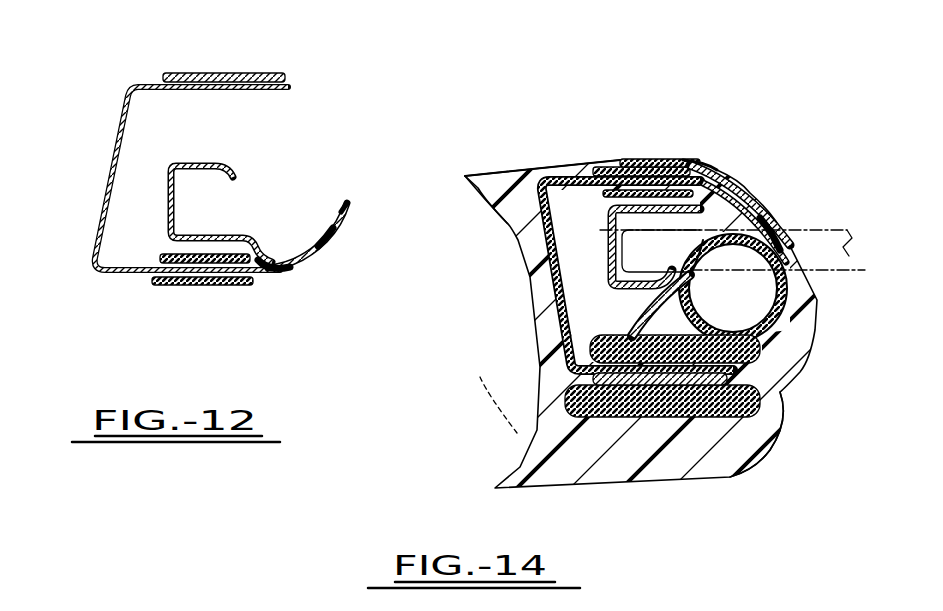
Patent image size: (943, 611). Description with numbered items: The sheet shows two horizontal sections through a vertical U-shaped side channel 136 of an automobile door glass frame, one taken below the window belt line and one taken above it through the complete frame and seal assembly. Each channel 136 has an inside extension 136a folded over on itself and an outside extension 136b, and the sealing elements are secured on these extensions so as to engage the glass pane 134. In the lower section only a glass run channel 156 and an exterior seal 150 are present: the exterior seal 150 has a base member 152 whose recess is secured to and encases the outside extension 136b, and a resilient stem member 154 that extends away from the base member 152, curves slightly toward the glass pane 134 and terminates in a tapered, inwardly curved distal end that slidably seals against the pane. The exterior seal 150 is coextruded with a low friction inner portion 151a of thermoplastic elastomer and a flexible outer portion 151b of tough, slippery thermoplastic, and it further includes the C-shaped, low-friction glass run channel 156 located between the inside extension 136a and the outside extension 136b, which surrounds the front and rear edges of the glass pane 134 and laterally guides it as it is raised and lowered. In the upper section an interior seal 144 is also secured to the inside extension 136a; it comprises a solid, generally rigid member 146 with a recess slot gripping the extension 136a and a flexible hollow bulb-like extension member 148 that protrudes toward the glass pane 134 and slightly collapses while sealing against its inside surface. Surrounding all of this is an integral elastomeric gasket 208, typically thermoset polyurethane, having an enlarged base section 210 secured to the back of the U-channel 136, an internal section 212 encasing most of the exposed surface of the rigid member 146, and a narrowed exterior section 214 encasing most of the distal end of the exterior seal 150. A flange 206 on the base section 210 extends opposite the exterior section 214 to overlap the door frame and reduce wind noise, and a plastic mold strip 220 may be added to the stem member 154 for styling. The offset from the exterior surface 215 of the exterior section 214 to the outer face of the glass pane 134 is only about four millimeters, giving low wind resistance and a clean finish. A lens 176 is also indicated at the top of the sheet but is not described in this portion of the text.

In FIG. 12, the U-shaped side channel 136 is at (127, 112).
In FIG. 14, the U-shaped side channel 136 is at (557, 307).
In FIG. 12, the inside extension 136a is at (230, 72).
In FIG. 14, the inside extension 136a is at (697, 383).
In FIG. 12, the outside extension 136b is at (143, 278).
In FIG. 14, the outside extension 136b is at (572, 170).
In FIG. 12, the exterior seal 150 is at (320, 247).
In FIG. 14, the exterior seal 150 is at (750, 197).
In FIG. 12, the low friction inner portion 151a is at (328, 230).
In FIG. 14, the low friction inner portion 151a is at (730, 205).
In FIG. 12, the flexible outer portion 151b is at (283, 273).
In FIG. 14, the flexible outer portion 151b is at (773, 200).
In FIG. 12, the base member 152 is at (238, 287).
In FIG. 14, the base member 152 is at (735, 187).
In FIG. 12, the stem member 154 is at (347, 203).
In FIG. 14, the stem member 154 is at (847, 256).
In FIG. 12, the glass run channel 156 is at (173, 220).
In FIG. 14, the glass run channel 156 is at (607, 232).
In FIG. 14, the lens 176 is at (415, 0).
In FIG. 14, the flange 206 is at (480, 177).
In FIG. 14, the gasket 208 is at (550, 350).
In FIG. 14, the base section 210 is at (530, 277).
In FIG. 14, the internal section 212 is at (612, 477).
In FIG. 14, the exterior section 214 is at (708, 157).
In FIG. 14, the exterior surface 215 is at (727, 170).
In FIG. 14, the mold strip 220 is at (642, 160).
In FIG. 14, the glass pane 134 is at (690, 272).
In FIG. 14, the interior seal 144 is at (790, 348).
In FIG. 14, the rigid member 146 is at (753, 410).
In FIG. 14, the hollow extension member 148 is at (813, 317).